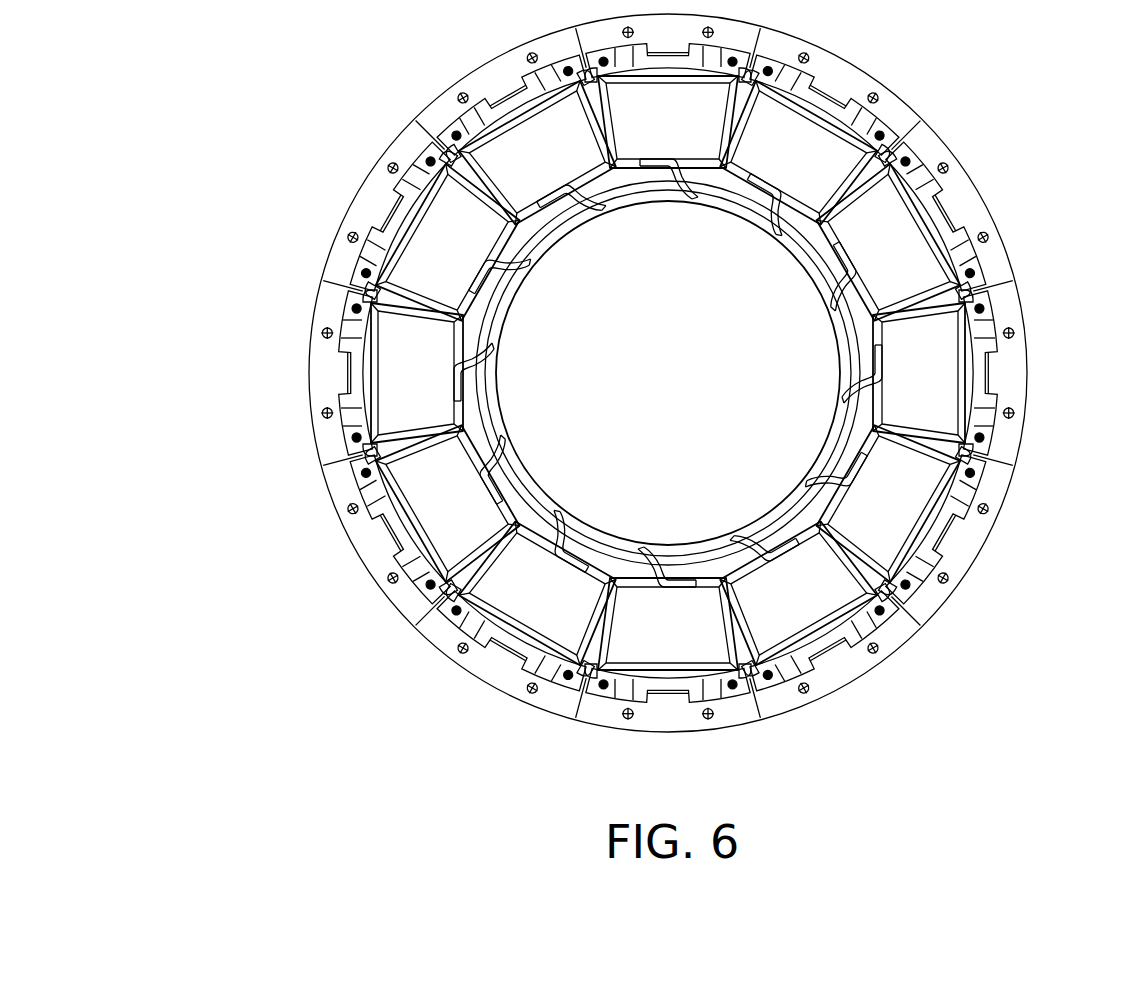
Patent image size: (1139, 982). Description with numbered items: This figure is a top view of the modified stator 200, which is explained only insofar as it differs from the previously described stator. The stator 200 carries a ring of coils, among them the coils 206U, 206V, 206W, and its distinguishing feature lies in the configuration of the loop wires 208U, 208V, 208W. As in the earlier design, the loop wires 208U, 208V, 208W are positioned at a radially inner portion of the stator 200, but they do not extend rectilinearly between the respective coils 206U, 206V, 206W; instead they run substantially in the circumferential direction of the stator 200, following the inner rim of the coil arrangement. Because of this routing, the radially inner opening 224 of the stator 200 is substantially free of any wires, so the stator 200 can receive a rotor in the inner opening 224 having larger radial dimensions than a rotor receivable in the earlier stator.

The stator 200 is at (1025, 102).
The radially inner opening 224 is at (705, 303).
The coil 206U is at (437, 265).
The coil 206V is at (395, 407).
The coil 206W is at (443, 528).
The loop wire 208U is at (530, 260).
The loop wire 208V is at (462, 378).
The loop wire 208W is at (490, 481).